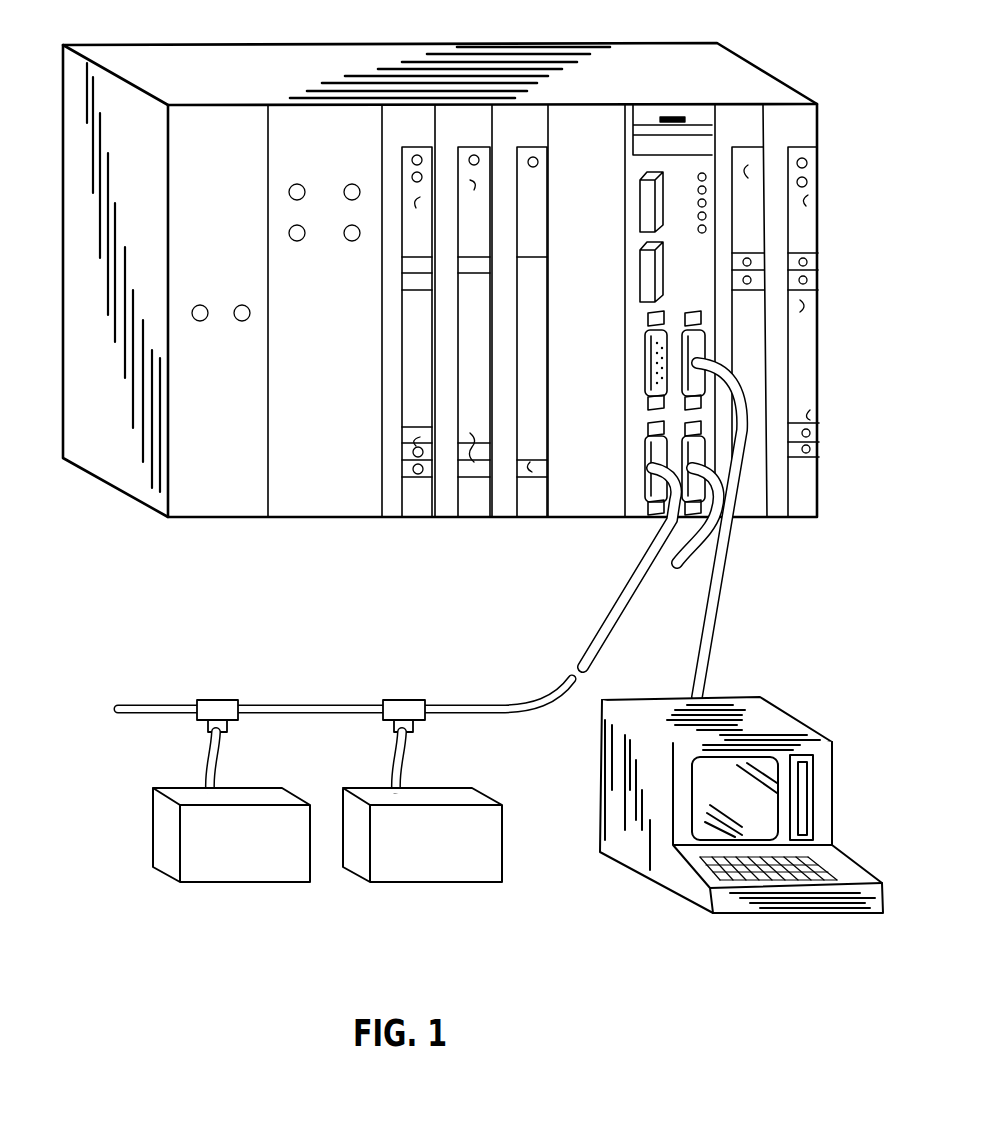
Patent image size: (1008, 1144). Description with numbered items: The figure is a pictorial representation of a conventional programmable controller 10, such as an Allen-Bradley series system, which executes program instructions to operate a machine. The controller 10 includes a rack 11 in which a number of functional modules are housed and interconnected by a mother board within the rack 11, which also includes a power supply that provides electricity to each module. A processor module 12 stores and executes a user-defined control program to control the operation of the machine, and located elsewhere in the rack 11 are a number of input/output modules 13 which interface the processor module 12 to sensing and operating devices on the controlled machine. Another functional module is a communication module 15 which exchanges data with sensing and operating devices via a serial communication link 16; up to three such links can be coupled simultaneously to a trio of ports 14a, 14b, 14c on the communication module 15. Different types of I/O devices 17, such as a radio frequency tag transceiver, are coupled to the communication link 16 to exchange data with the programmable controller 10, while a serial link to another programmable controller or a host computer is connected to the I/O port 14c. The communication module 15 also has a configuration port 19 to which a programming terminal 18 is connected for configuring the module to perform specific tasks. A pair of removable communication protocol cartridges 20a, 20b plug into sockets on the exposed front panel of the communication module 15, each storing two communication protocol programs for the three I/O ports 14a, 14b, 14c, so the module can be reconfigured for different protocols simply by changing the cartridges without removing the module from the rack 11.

The programmable controller 10 is at (305, 38).
The rack 11 is at (131, 486).
The processor module 12 is at (336, 513).
The input/output (I/O) modules 13 is at (420, 511).
The I/O port 14a is at (645, 361).
The I/O port 14b is at (645, 456).
The I/O port 14c is at (700, 504).
The communication module 15 is at (643, 513).
The serial communication link 16 is at (609, 626).
The I/O devices 17 is at (276, 876).
The programming terminal 18 is at (612, 758).
The configuration port 19 is at (701, 328).
The communication protocol cartridge 20a is at (643, 200).
The communication protocol cartridge 20b is at (647, 273).